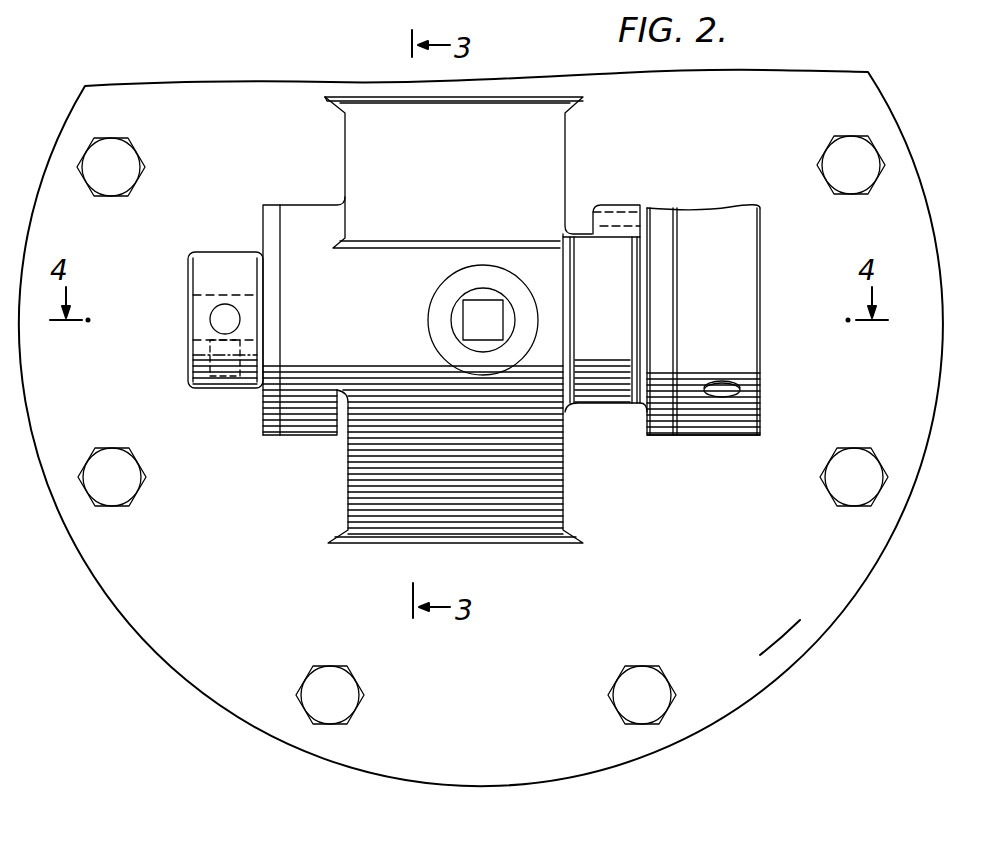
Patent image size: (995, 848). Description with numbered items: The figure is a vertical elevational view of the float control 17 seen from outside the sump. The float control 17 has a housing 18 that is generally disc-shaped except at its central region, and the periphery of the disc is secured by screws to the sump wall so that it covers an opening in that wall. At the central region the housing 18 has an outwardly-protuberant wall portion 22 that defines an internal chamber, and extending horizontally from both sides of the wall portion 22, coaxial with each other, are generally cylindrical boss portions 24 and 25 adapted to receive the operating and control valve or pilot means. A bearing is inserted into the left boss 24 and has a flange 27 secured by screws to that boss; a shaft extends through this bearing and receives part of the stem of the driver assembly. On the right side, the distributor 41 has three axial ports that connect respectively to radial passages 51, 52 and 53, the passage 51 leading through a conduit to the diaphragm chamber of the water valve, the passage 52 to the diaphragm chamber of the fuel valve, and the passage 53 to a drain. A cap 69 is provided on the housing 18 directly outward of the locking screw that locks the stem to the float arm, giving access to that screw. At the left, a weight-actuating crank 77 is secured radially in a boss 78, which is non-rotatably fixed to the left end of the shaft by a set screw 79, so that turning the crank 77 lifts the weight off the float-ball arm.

The float control 17 is at (178, 702).
The housing 18 is at (778, 653).
The outwardly-protuberant wall portion 22 is at (556, 459).
The boss portion 24 is at (300, 212).
The boss portion 25 is at (614, 248).
The flange 27 is at (266, 438).
The distributor 41 is at (758, 284).
The radial passage 51 is at (730, 208).
The radial passage 52 is at (738, 393).
The radial passage 53 is at (720, 435).
The cap 69 is at (463, 318).
The weight-actuating crank 77 is at (210, 320).
The boss 78 is at (222, 258).
The set screw 79 is at (206, 378).